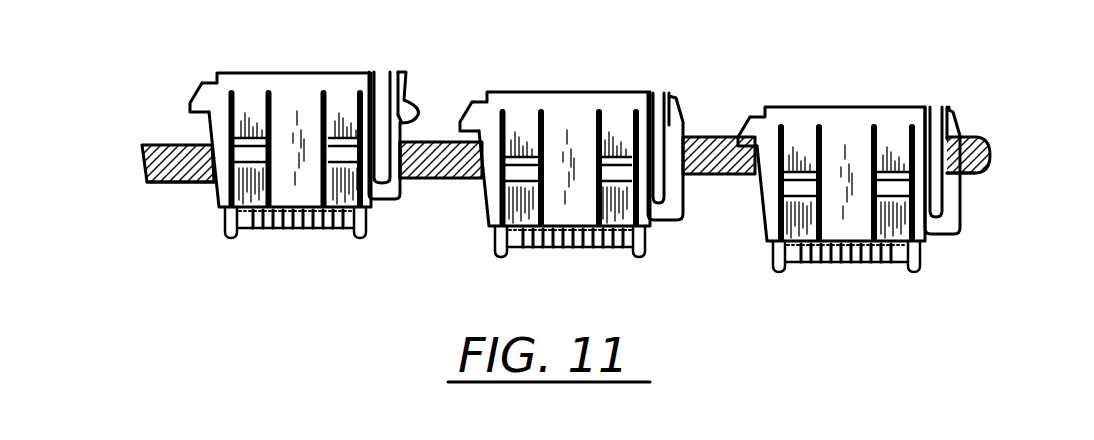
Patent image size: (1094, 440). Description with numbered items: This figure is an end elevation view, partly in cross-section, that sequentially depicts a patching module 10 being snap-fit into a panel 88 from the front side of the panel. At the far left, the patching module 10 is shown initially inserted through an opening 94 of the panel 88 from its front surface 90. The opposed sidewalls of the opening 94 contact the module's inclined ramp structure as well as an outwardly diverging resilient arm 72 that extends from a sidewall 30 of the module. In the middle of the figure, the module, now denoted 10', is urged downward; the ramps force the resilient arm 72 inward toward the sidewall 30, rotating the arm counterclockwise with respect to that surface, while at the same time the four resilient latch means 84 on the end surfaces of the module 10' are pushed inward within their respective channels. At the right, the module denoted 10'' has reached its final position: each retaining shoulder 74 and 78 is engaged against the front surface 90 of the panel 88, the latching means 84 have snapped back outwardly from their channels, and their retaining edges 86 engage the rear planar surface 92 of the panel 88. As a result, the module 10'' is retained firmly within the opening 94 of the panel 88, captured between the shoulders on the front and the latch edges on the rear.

The patching module 10 is at (286, 123).
The patching module 10' is at (561, 142).
The patching module 10'' is at (855, 158).
The sidewall 30 is at (378, 72).
The resilient arm 72 is at (432, 120).
The retaining shoulder 74 is at (420, 112).
The retaining shoulder 78 is at (192, 113).
The resilient latch means 84 is at (500, 186).
The retaining edge 86 is at (807, 155).
The panel 88 is at (158, 141).
The front surface 90 is at (973, 133).
The rear planar surface 92 is at (975, 178).
The opening 94 is at (213, 182).